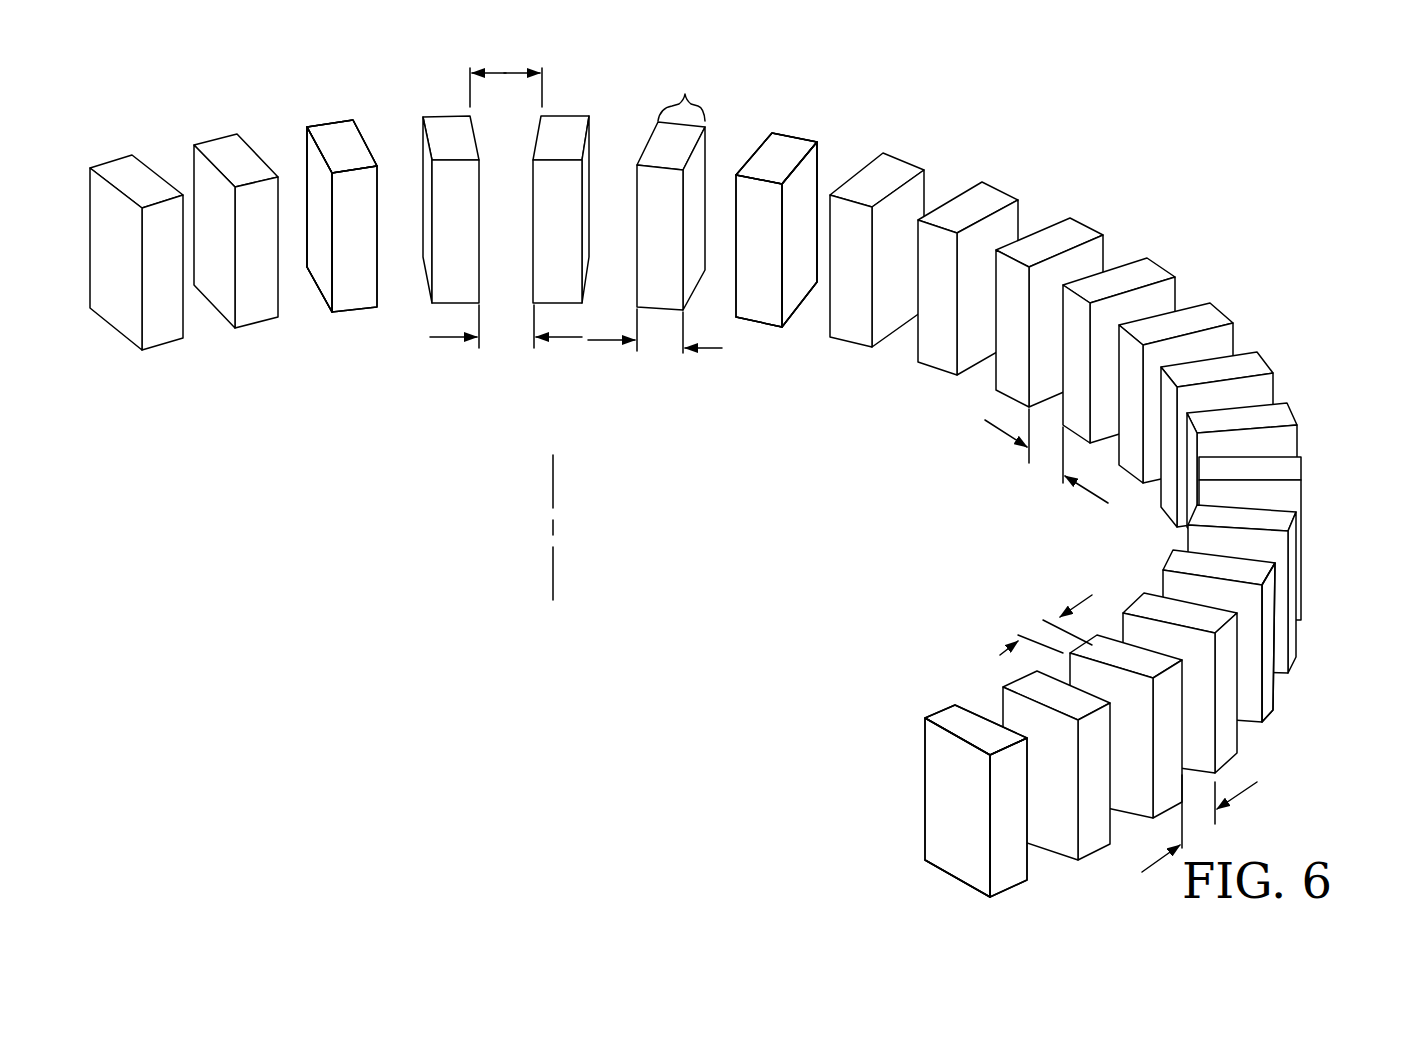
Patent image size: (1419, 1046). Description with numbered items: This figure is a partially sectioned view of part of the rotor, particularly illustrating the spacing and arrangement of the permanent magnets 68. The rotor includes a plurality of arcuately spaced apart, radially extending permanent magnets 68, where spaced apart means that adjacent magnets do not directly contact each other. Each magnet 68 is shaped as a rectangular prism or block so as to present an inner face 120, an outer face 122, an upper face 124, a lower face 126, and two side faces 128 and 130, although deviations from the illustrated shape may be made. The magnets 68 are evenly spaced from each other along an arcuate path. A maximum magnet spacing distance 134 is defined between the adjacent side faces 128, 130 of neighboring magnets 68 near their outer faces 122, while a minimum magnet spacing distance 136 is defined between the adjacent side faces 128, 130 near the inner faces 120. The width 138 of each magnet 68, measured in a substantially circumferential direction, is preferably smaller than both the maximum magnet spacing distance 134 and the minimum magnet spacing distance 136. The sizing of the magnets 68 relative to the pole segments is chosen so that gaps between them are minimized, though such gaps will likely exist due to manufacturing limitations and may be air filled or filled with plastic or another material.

The permanent magnet 68 is at (218, 131).
The inner face 120 is at (367, 237).
The outer face 122 is at (1018, 797).
The upper face 124 is at (352, 141).
The lower face 126 is at (317, 290).
The side face 128 is at (315, 192).
The side face 130 is at (802, 191).
The maximum magnet spacing distance 134 is at (1221, 843).
The minimum magnet spacing distance 136 is at (1045, 462).
The width 138 is at (1038, 631).